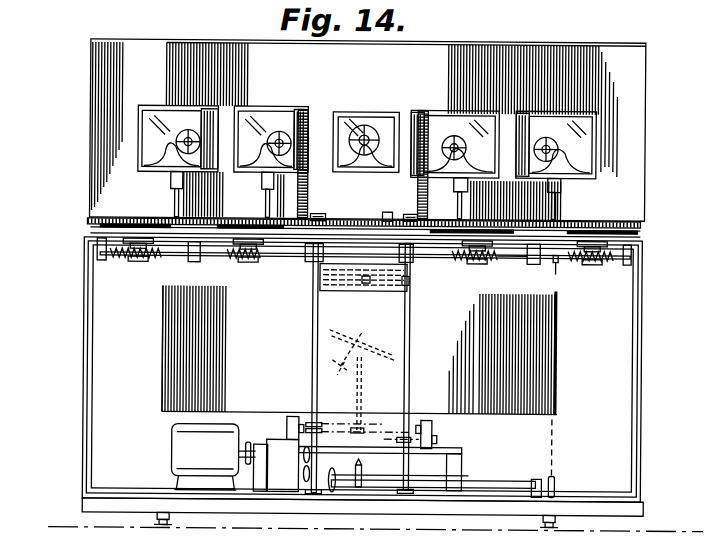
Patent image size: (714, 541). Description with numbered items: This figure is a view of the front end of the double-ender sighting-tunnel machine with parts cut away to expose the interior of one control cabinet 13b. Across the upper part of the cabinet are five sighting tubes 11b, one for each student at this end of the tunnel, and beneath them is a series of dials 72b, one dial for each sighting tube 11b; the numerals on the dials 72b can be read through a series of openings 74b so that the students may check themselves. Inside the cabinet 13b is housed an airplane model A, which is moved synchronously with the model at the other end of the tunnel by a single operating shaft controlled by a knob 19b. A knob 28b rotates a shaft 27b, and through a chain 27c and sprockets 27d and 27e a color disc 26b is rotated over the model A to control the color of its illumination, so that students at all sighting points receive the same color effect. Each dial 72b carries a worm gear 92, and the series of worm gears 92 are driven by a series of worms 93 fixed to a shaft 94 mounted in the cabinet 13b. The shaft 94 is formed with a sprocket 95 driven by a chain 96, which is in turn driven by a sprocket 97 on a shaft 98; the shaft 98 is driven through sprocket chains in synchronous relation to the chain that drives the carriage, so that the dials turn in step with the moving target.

The sighting tube 11b is at (328, 113).
The openings 74b is at (172, 217).
The knob 19b is at (319, 214).
The knob 28b is at (411, 214).
The dials 72b is at (220, 229).
The control cabinet 13b is at (84, 373).
The worm gear 92 is at (155, 262).
The worms 93 is at (137, 262).
The shaft 94 is at (518, 262).
The sprocket 95 is at (557, 266).
The shaft 27b is at (414, 250).
The chain 27c is at (400, 286).
The sprocket 27d is at (411, 272).
The sprocket 27e is at (365, 284).
The color disc 26b is at (300, 288).
The airplane model A is at (391, 337).
The chain 96 is at (555, 449).
The sprocket 97 is at (558, 480).
The shaft 98 is at (497, 481).